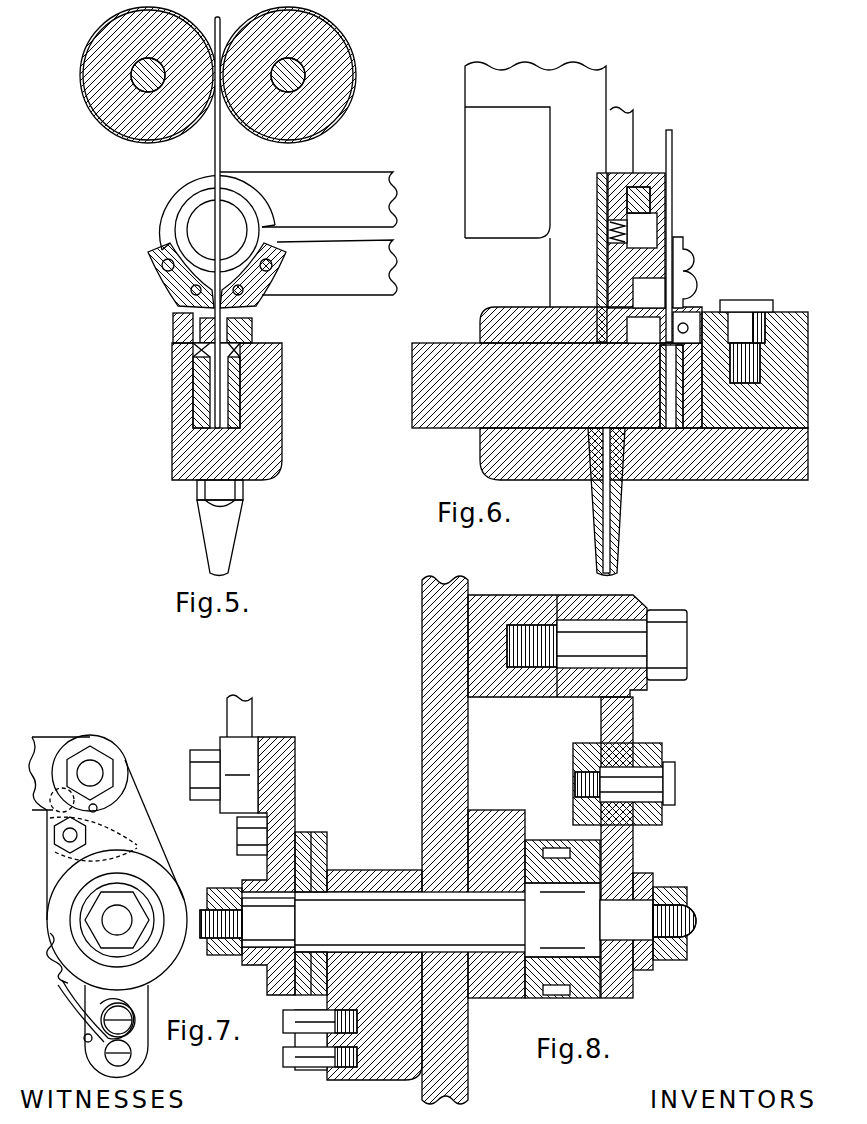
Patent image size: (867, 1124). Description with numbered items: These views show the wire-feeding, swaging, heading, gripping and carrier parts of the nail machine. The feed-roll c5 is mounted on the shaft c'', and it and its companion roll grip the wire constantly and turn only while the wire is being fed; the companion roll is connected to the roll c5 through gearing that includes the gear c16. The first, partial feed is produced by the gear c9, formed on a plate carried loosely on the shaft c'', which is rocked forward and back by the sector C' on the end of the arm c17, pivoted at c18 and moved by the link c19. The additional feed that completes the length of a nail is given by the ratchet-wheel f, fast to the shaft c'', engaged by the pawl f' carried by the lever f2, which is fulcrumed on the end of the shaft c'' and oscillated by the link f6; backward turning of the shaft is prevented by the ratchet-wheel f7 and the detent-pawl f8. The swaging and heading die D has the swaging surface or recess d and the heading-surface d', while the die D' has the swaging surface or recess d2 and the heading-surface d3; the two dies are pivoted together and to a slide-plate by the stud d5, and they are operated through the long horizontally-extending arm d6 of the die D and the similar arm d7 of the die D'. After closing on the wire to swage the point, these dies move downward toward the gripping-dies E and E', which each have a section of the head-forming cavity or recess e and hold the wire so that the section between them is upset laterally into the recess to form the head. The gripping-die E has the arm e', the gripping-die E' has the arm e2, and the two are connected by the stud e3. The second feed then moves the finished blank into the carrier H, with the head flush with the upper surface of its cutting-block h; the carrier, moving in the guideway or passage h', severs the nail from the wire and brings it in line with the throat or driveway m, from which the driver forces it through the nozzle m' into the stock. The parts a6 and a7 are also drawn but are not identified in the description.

In FIG. 5, the feed-roll c5 is at (217, 75).
In FIG. 8, the feed-roll c5 is at (540, 858).
In FIG. 5, the stud d5 is at (205, 218).
In FIG. 5, the long horizontally-extending arm d6 is at (307, 199).
In FIG. 5, the arm d7 is at (329, 267).
In FIG. 5, the swaging surface or recess d2 is at (248, 255).
In FIG. 5, the die D is at (172, 275).
In FIG. 5, the swaging-die D' is at (253, 282).
In FIG. 6, the swaging-die D' is at (701, 272).
In FIG. 5, the swaging surface or recess d is at (173, 307).
In FIG. 5, the heading-surface d' is at (156, 327).
In FIG. 5, the heading-surface d3 is at (252, 320).
In FIG. 5, the head-forming cavity or recess e is at (213, 330).
In FIG. 5, the gripping-die E is at (172, 385).
In FIG. 5, the gripping-die E' is at (272, 381).
In FIG. 6, the gripping-die E' is at (679, 360).
In FIG. 5, the cutting-block h is at (156, 371).
In FIG. 6, the cutting-block h is at (698, 308).
In FIG. 5, the guideway or passage h' is at (163, 443).
In FIG. 5, the carrier H is at (240, 400).
In FIG. 6, the carrier H is at (440, 428).
In FIG. 5, the throat or driveway m is at (232, 528).
In FIG. 6, the throat or driveway m is at (624, 500).
In FIG. 6, the nozzle m' is at (622, 502).
In FIG. 6, the housing a6 is at (665, 198).
In FIG. 6, the slide a7 is at (637, 187).
In FIG. 6, the arm e' is at (770, 370).
In FIG. 6, the arm e2 is at (775, 313).
In FIG. 6, the stud e3 is at (768, 290).
In FIG. 8, the arm c17 is at (633, 720).
In FIG. 8, the pivot c18 is at (687, 641).
In FIG. 8, the link c19 is at (662, 755).
In FIG. 8, the feed-roll shaft c'' is at (448, 921).
In FIG. 8, the gear c16 is at (558, 998).
In FIG. 8, the gear c9 is at (637, 993).
In FIG. 8, the sector C' is at (651, 843).
In FIG. 8, the ratchet-wheel f is at (339, 920).
In FIG. 7, the pawl f' is at (112, 824).
In FIG. 8, the lever f2 is at (295, 810).
In FIG. 7, the lever f2 is at (128, 805).
In FIG. 8, the link f6 is at (252, 735).
In FIG. 8, the ratchet-wheel f7 is at (327, 858).
In FIG. 7, the ratchet-wheel f7 is at (62, 958).
In FIG. 7, the detent-pawl f8 is at (78, 1003).